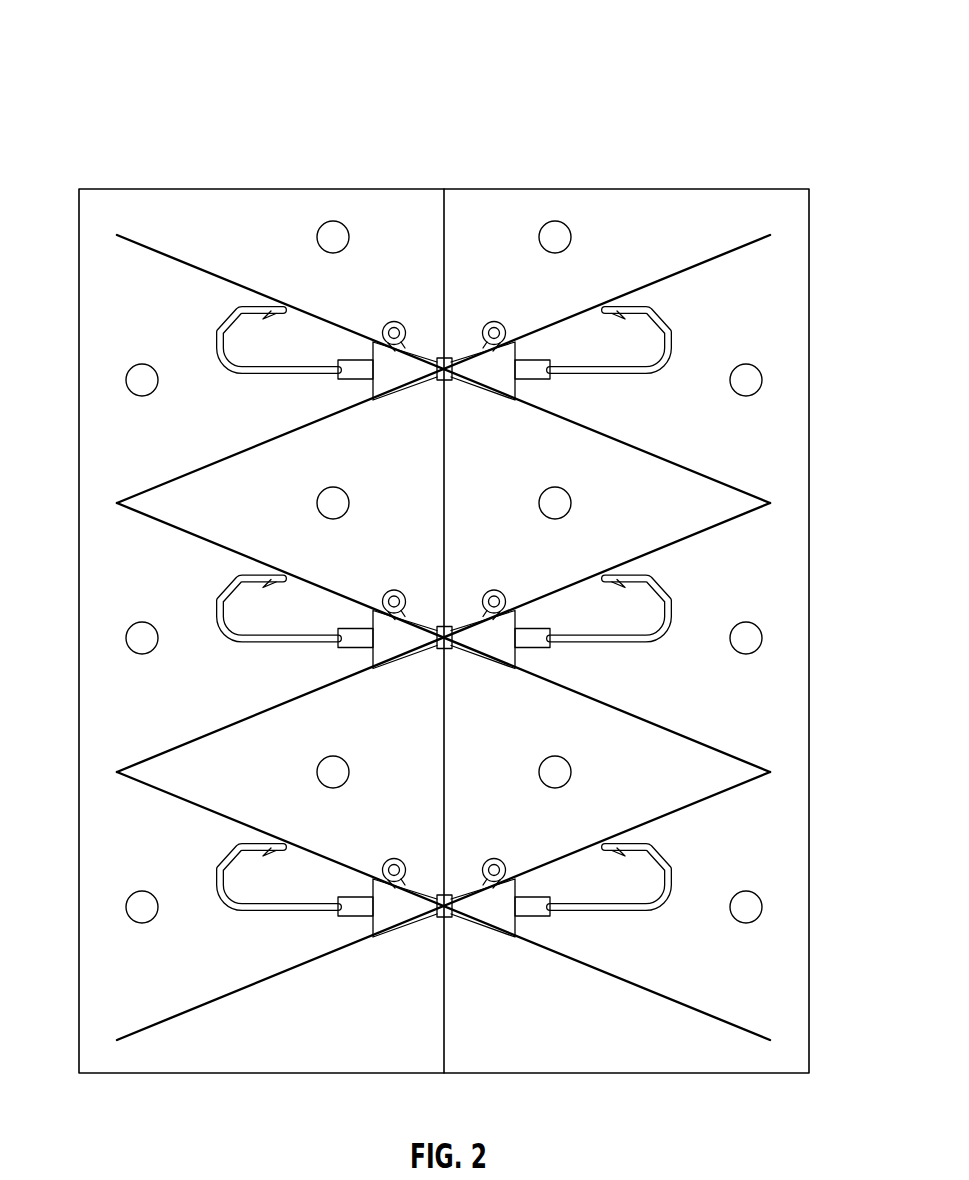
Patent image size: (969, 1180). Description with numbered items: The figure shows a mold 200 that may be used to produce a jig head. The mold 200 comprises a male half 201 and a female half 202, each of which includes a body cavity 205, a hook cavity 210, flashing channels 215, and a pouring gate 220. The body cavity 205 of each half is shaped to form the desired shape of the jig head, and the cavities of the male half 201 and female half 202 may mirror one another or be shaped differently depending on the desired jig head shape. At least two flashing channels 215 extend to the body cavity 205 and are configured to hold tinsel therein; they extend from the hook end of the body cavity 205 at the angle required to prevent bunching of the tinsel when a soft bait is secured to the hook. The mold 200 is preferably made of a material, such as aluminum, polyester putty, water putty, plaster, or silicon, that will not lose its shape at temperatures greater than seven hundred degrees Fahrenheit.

The mold 200 is at (123, 56).
The male half 201 is at (143, 326).
The female half 202 is at (792, 283).
The body cavity 205 is at (398, 638).
The hook cavity 210 is at (675, 613).
The flashing channel 215 is at (760, 778).
The pouring gate 220 is at (439, 357).